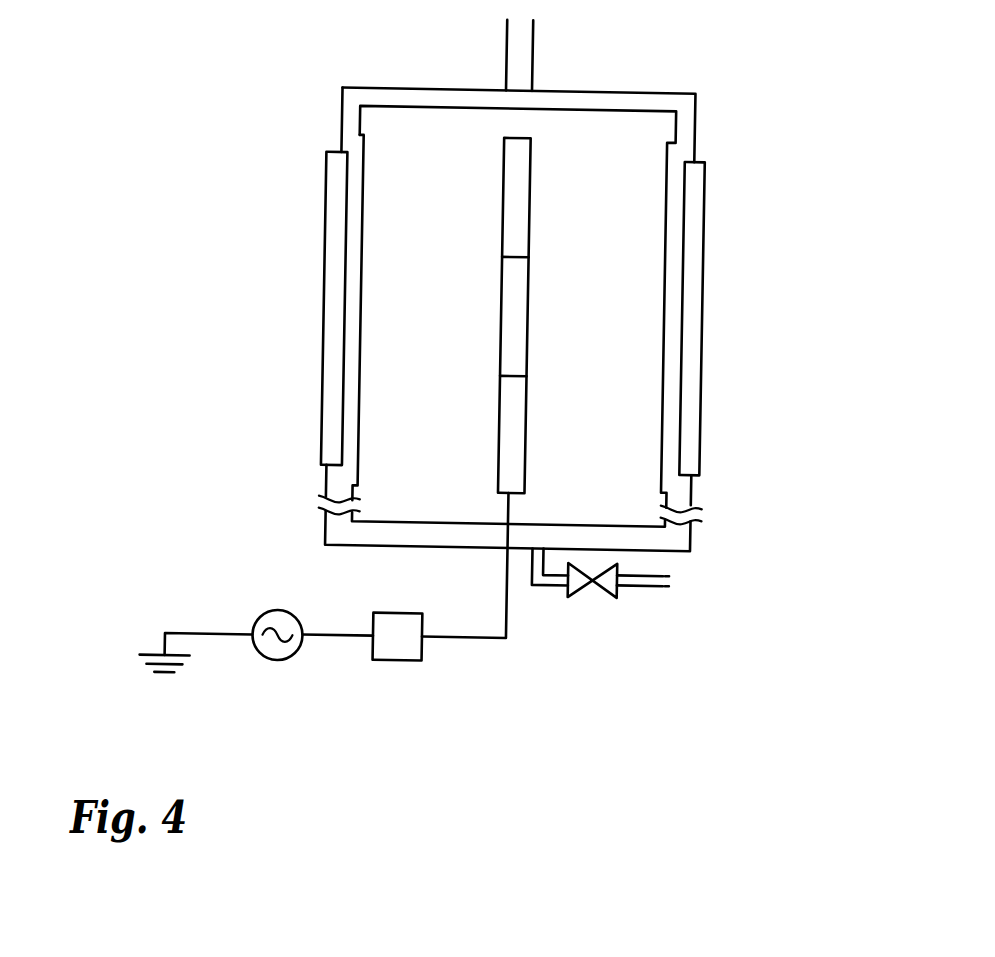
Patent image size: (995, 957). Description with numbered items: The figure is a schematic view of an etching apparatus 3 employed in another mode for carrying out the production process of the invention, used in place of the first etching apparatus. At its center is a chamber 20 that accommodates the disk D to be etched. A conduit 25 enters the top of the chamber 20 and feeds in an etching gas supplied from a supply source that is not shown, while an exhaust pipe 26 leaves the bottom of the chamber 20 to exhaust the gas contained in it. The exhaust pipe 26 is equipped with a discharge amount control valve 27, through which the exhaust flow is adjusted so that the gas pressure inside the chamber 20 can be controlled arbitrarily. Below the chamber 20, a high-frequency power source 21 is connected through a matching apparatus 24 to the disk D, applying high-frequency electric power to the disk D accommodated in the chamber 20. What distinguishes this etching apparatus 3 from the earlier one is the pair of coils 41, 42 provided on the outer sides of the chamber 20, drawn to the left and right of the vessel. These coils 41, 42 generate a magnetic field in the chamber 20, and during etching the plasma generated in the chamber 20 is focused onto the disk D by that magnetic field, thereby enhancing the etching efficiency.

The etching apparatus 3 is at (688, 77).
The chamber 20 is at (690, 119).
The conduit 25 is at (533, 42).
The coil 41 is at (334, 255).
The coil 42 is at (695, 267).
The disk D is at (503, 422).
The high-frequency power source 21 is at (258, 652).
The matching apparatus 24 is at (387, 662).
The exhaust pipe 26 is at (538, 590).
The discharge amount control valve 27 is at (608, 595).